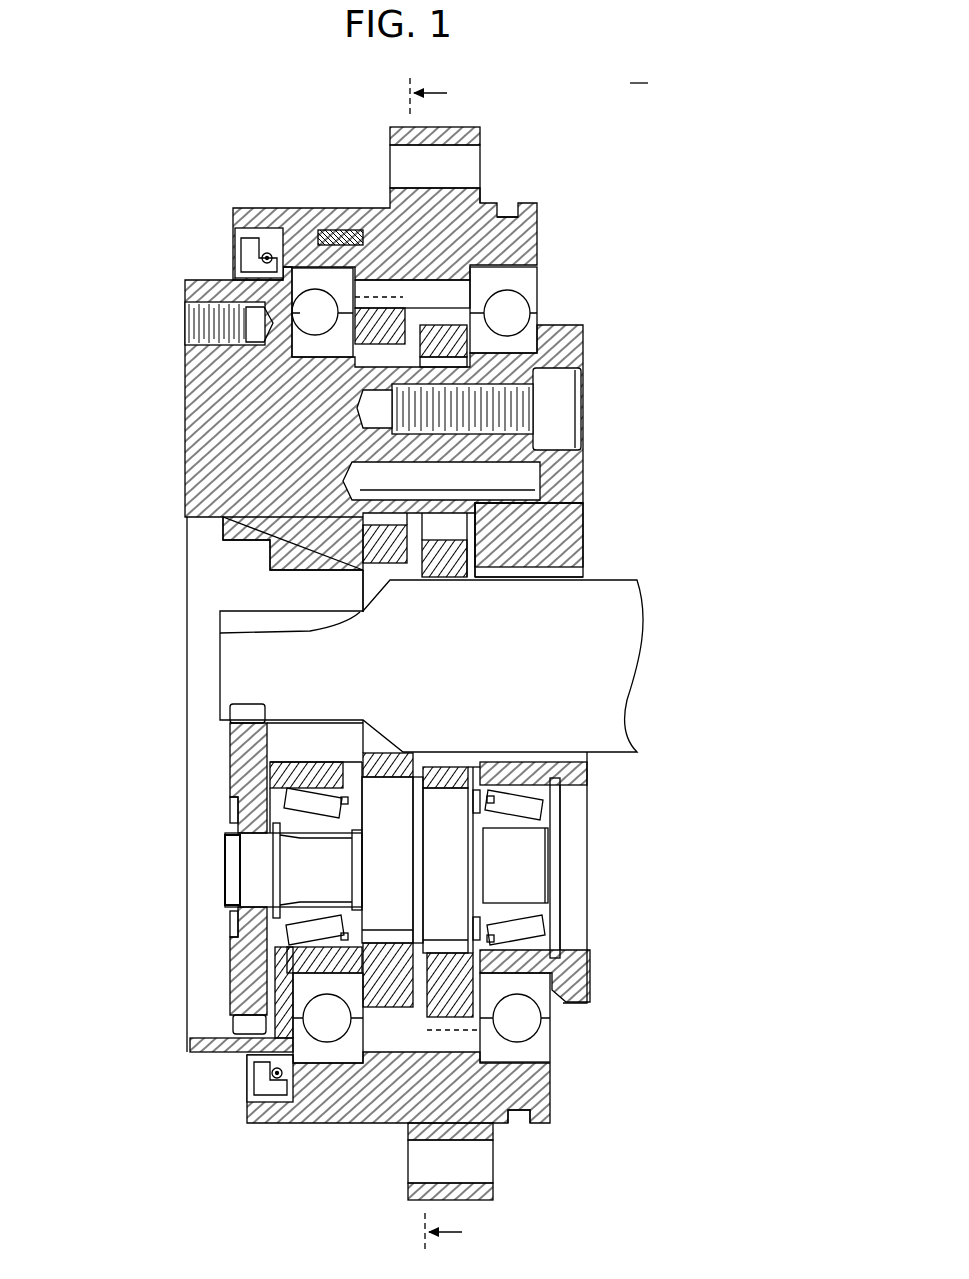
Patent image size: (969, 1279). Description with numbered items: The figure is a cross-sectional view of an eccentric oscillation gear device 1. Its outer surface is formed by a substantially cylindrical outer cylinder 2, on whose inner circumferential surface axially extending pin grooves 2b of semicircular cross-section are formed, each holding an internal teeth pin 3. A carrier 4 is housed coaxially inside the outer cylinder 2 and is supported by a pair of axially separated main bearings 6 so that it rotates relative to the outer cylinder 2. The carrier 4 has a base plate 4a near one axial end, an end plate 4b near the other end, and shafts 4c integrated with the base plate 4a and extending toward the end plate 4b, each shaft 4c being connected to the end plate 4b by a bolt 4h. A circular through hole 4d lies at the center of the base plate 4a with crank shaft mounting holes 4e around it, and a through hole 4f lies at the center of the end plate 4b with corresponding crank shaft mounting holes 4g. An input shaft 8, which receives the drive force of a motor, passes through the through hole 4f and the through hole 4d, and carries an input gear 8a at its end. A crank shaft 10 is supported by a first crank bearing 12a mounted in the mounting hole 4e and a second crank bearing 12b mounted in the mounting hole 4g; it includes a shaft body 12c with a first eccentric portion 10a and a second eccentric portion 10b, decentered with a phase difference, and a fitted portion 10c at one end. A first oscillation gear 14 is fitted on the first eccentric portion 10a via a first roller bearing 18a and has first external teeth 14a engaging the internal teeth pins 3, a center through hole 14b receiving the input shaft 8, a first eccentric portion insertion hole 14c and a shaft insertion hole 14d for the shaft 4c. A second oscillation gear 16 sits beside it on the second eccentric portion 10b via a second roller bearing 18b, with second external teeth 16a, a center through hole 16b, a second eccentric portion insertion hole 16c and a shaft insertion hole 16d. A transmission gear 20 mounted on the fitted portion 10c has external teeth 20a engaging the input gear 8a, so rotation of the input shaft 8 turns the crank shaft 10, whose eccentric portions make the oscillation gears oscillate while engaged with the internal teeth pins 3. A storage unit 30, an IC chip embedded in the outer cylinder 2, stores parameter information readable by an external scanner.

The gear device 1 is at (529, 653).
The outer cylinder 2 is at (323, 1123).
The pin groove 2b is at (443, 1040).
The internal teeth pin 3 is at (445, 292).
The carrier 4 is at (375, 108).
The base plate 4a is at (203, 385).
The end plate 4b is at (450, 320).
The shaft 4c is at (390, 377).
The through hole 4d is at (367, 587).
The crank shaft mounting hole 4e is at (240, 797).
The through hole 4f is at (550, 578).
The crank shaft mounting hole 4g is at (580, 793).
The bolt 4h is at (558, 408).
The main bearing 6 is at (543, 298).
The input shaft 8 is at (608, 685).
The input gear 8a is at (313, 737).
The crank shaft 10 is at (213, 873).
The first eccentric portion 10a is at (320, 855).
The second eccentric portion 10b is at (457, 867).
The fitted portion 10c is at (255, 885).
The first crank bearing 12a is at (278, 928).
The second crank bearing 12b is at (562, 908).
The shaft body 12c is at (533, 840).
The first oscillation gear 14 is at (350, 520).
The first external teeth 14a is at (403, 297).
The center through hole 14b is at (345, 590).
The first eccentric portion insertion hole 14c is at (285, 985).
The shaft insertion hole 14d is at (372, 517).
The second oscillation gear 16 is at (490, 560).
The second external teeth 16a is at (538, 245).
The center through hole 16b is at (462, 792).
The second eccentric portion insertion hole 16c is at (482, 952).
The shaft insertion hole 16d is at (475, 513).
The first roller bearing 18a is at (392, 790).
The second roller bearing 18b is at (448, 800).
The transmission gear 20 is at (240, 765).
The external teeth 20a is at (230, 715).
The storage unit 30 is at (320, 232).